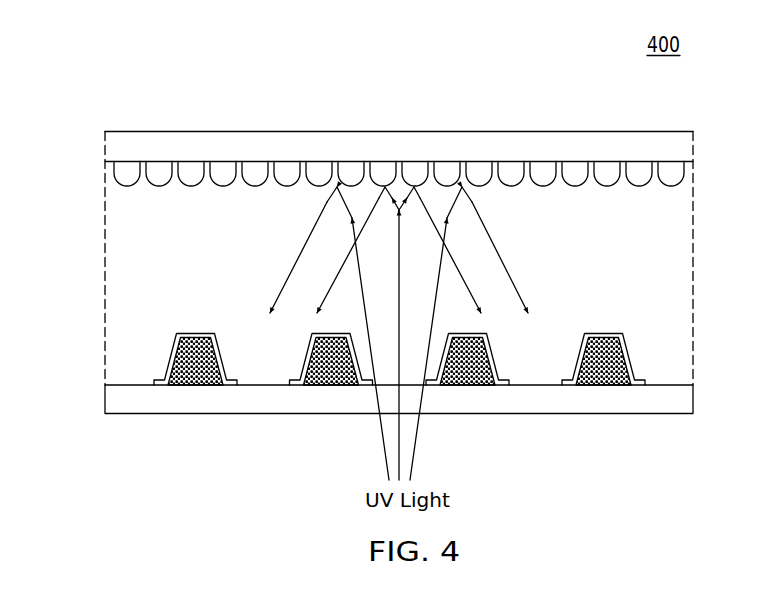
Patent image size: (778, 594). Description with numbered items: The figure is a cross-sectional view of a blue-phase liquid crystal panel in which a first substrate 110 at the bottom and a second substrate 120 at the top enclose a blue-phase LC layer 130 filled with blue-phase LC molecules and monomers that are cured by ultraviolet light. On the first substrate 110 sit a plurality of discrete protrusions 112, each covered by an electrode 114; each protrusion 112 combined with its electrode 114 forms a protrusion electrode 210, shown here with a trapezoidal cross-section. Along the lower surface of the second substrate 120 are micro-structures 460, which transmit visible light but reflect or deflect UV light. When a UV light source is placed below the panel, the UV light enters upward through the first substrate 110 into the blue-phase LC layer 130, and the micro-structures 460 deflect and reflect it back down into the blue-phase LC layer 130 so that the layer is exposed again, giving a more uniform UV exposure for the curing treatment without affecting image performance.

The second substrate 120 is at (685, 147).
The micro-structures 460 is at (512, 173).
The blue-phase LC layer 130 is at (685, 281).
The first substrate 110 is at (685, 406).
The protrusion electrode 210 is at (326, 348).
The electrode 114 is at (176, 343).
The protrusion 112 is at (182, 373).